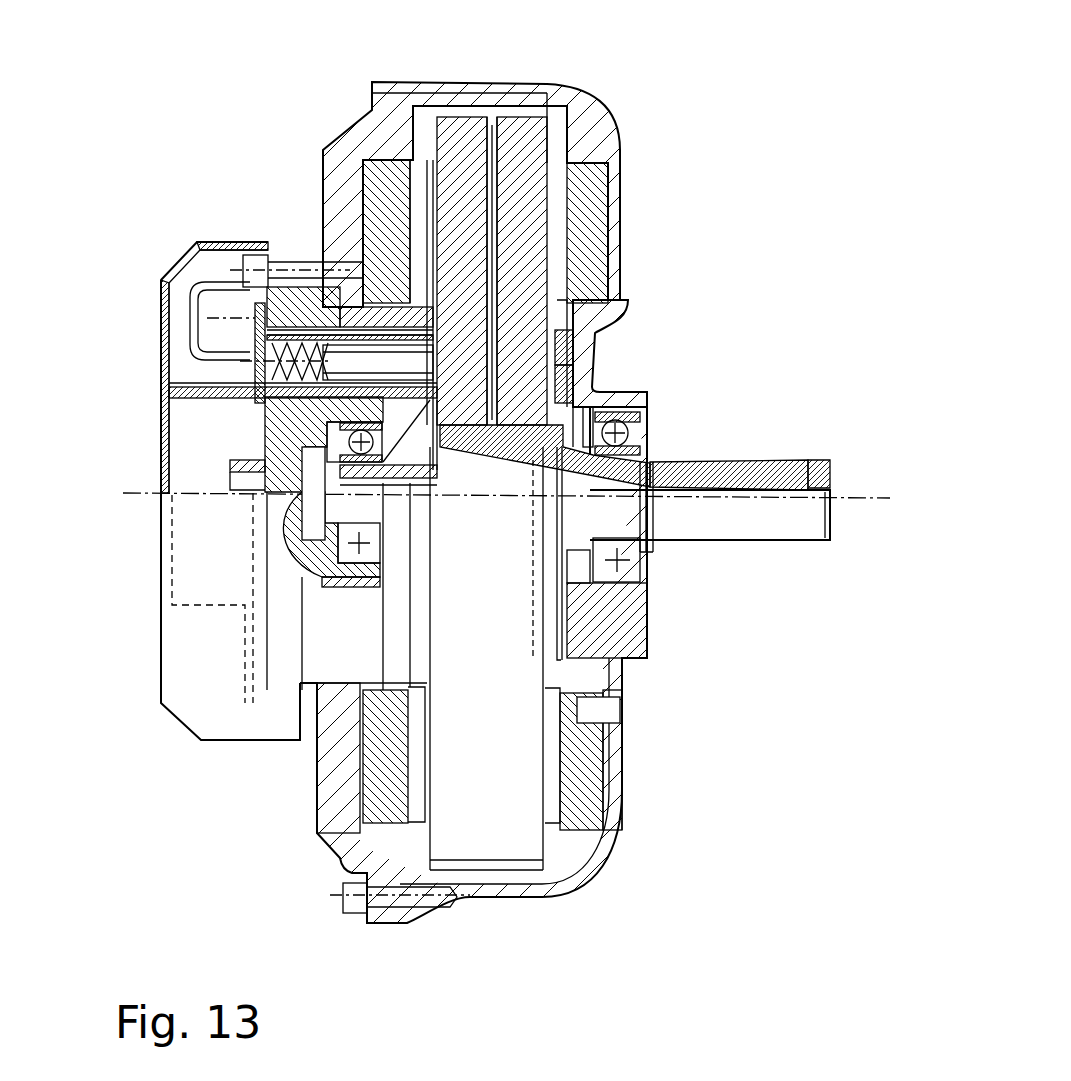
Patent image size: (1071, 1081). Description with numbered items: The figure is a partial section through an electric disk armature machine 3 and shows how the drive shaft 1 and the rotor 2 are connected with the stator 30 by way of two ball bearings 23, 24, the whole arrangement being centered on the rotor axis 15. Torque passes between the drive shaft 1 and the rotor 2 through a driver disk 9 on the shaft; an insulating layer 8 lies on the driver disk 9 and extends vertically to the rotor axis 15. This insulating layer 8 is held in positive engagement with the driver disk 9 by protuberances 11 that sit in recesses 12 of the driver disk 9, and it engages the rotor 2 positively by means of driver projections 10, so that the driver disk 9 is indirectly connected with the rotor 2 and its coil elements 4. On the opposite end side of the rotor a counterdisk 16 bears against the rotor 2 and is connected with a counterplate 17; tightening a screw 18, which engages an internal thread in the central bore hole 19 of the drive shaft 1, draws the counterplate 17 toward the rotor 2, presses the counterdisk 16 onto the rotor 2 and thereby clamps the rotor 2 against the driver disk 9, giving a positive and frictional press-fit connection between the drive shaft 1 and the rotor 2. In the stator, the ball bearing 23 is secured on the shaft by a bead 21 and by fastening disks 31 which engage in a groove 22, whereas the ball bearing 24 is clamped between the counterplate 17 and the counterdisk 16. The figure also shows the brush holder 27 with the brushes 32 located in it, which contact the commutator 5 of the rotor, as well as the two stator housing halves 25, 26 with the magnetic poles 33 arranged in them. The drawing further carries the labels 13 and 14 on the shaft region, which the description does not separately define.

The drive shaft 1 is at (807, 540).
The rotor 2 is at (533, 873).
The disk armature machine 3 is at (663, 943).
The coil elements 4 is at (506, 125).
The commutator 5 is at (384, 112).
The insulating layer 8 is at (497, 450).
The driver disk 9 is at (563, 620).
The driver projections 10 is at (572, 322).
The protuberances 11 is at (560, 375).
The recesses 12 is at (553, 405).
The shaft section 13 is at (763, 540).
The hub flange 14 is at (745, 470).
The rotor axis 15 is at (877, 497).
The counterdisk 16 is at (400, 580).
The counterplate 17 is at (303, 517).
The screw 18 is at (267, 495).
The central bore hole 19 is at (295, 545).
The bead 21 is at (650, 530).
The groove 22 is at (655, 540).
The ball bearing 23 is at (650, 432).
The ball bearing 24 is at (169, 398).
The stator housing half 25 is at (623, 755).
The stator housing half 26 is at (330, 808).
The brush holder 27 is at (161, 304).
The stator 30 is at (668, 113).
The fastening disks 31 is at (650, 553).
The brushes 32 is at (340, 327).
The magnetic poles 33 is at (360, 203).